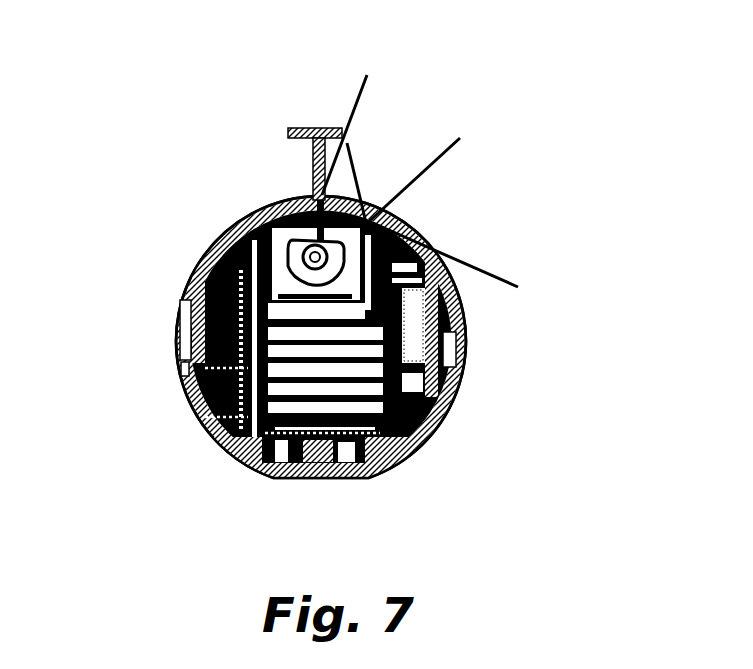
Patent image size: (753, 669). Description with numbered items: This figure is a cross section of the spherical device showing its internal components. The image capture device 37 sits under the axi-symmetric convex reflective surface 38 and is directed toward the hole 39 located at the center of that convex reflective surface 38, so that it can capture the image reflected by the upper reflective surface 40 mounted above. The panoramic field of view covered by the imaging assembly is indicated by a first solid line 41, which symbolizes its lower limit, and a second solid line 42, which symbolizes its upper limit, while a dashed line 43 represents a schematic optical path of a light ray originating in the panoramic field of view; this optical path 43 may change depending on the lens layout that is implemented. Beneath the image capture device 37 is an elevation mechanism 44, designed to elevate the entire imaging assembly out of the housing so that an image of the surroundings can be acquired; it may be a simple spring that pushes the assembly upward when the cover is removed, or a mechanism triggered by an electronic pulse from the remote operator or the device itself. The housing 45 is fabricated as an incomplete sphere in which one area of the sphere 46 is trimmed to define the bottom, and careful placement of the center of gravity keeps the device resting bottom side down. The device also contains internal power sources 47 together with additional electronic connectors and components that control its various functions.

The image capture device 37 is at (253, 244).
The axi-symmetric convex reflective surface 38 is at (287, 215).
The hole 39 is at (315, 197).
The upper reflective surface 40 is at (315, 125).
The first solid line 41 is at (480, 271).
The second solid line 42 is at (358, 102).
The dashed line 43 is at (437, 158).
The elevation mechanism 44 is at (455, 377).
The housing 45 is at (176, 368).
The trimmed area of the sphere 46 is at (287, 478).
The internal power sources 47 is at (183, 309).